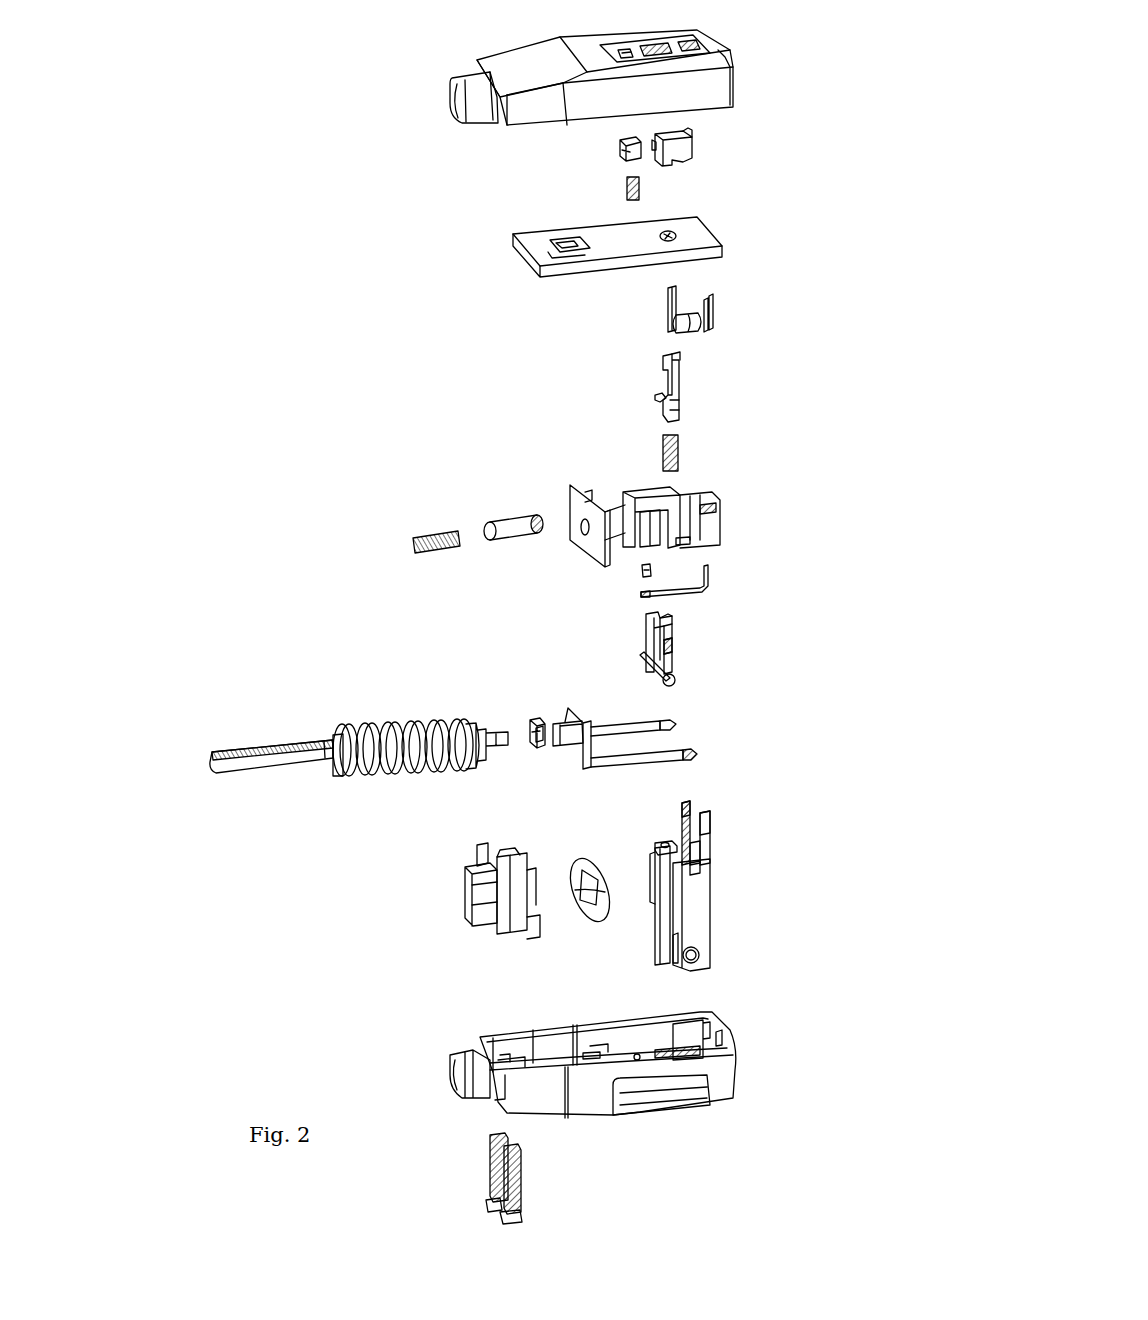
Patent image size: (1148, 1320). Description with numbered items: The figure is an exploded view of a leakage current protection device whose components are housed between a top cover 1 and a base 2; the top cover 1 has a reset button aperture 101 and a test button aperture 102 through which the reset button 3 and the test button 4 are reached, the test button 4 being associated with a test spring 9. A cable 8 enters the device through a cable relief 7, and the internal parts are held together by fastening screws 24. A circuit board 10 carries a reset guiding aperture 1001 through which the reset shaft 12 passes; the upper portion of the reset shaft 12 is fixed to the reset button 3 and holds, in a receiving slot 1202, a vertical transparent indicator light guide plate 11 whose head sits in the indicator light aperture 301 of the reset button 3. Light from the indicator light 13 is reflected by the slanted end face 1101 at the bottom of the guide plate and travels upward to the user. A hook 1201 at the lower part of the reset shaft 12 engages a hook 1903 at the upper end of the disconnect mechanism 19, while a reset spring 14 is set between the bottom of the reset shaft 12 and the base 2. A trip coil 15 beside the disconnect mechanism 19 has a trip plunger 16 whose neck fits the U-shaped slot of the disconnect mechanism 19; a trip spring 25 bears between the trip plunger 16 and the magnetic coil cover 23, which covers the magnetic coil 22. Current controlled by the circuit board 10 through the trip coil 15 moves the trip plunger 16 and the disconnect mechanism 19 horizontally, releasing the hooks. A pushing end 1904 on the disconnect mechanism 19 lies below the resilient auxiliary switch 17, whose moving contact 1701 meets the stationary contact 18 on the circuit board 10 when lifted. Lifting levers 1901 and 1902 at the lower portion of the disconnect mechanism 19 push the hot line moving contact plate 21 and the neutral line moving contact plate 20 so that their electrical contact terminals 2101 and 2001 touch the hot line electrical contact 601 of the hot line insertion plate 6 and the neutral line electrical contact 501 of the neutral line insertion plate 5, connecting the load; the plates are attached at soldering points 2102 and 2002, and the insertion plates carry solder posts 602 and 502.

The top cover 1 is at (717, 50).
The reset button aperture 101 is at (668, 45).
The test button aperture 102 is at (626, 52).
The base 2 is at (735, 1052).
The reset button 3 is at (685, 166).
The indicator light aperture 301 is at (680, 131).
The test button 4 is at (620, 143).
The neutral line insertion plate 5 is at (655, 872).
The neutral line electrical contact 501 is at (658, 841).
The solder post 502 is at (692, 812).
The hot line insertion plate 6 is at (698, 930).
The hot line electrical contact 601 is at (693, 868).
The solder post 602 is at (710, 838).
The cable relief 7 is at (420, 712).
The cable 8 is at (280, 740).
The test spring 9 is at (626, 186).
The circuit board 10 is at (530, 234).
The reset guiding aperture 1001 is at (674, 234).
The indicator light guide plate 11 is at (668, 302).
The slanted end face 1101 is at (676, 330).
The reset shaft 12 is at (663, 378).
The hook of reset shaft 1201 is at (657, 398).
The receiving slot 1202 is at (680, 354).
The indicator light 13 is at (715, 312).
The reset spring 14 is at (663, 452).
The trip coil 15 is at (575, 490).
The trip plunger 16 is at (500, 522).
The auxiliary switch 17 is at (708, 574).
The moving contact of auxiliary switch 1701 is at (652, 595).
The stationary contact of auxiliary switch 18 is at (641, 572).
The disconnect mechanism 19 is at (647, 634).
The lifting lever 1901 is at (641, 655).
The lifting lever 1902 is at (662, 682).
The hook of disconnect mechanism 1903 is at (672, 622).
The pushing end 1904 is at (672, 650).
The neutral line moving contact plate 20 is at (568, 716).
The electrical contact terminal of neutral line moving contact plate 2001 is at (676, 727).
The soldering point of neutral line moving contact plate 2002 is at (530, 722).
The hot line moving contact plate 21 is at (580, 750).
The electrical contact terminal of hot line moving contact plate 2101 is at (697, 754).
The soldering point of hot line moving contact plate 2102 is at (543, 752).
The magnetic coil 22 is at (470, 858).
The magnetic coil cover 23 is at (580, 862).
The fastening screws 24 is at (490, 1140).
The trip spring 25 is at (420, 538).